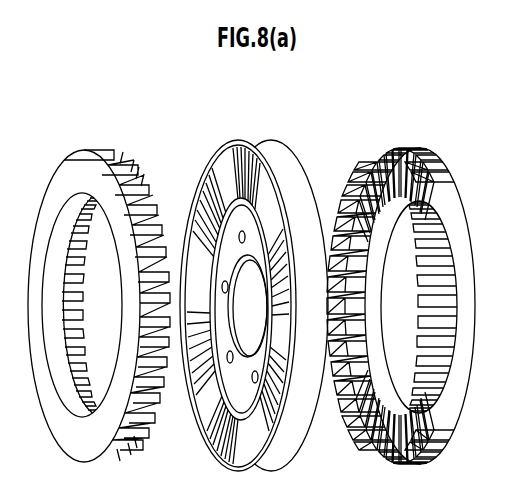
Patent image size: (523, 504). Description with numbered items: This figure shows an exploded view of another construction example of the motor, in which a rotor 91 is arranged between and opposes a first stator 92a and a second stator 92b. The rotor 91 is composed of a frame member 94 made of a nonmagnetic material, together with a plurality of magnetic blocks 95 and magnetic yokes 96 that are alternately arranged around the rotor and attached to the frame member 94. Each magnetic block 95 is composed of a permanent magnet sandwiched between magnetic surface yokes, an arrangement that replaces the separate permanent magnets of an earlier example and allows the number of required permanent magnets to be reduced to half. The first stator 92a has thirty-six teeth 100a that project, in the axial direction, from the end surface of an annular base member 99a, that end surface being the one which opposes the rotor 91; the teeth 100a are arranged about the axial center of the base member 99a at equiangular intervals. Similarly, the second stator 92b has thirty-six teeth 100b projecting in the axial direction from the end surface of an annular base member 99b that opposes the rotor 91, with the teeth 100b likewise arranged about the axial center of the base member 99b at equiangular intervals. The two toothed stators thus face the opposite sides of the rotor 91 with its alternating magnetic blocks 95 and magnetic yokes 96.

The rotor 91 is at (257, 277).
The first stator 92a is at (417, 274).
The second stator 92b is at (110, 279).
The frame member 94 is at (293, 440).
The magnetic block 95 is at (268, 208).
The magnetic yoke 96 is at (232, 150).
The annular base member 99a is at (463, 368).
The annular base member 99b is at (66, 437).
The teeth 100a is at (430, 417).
The teeth 100b is at (143, 417).